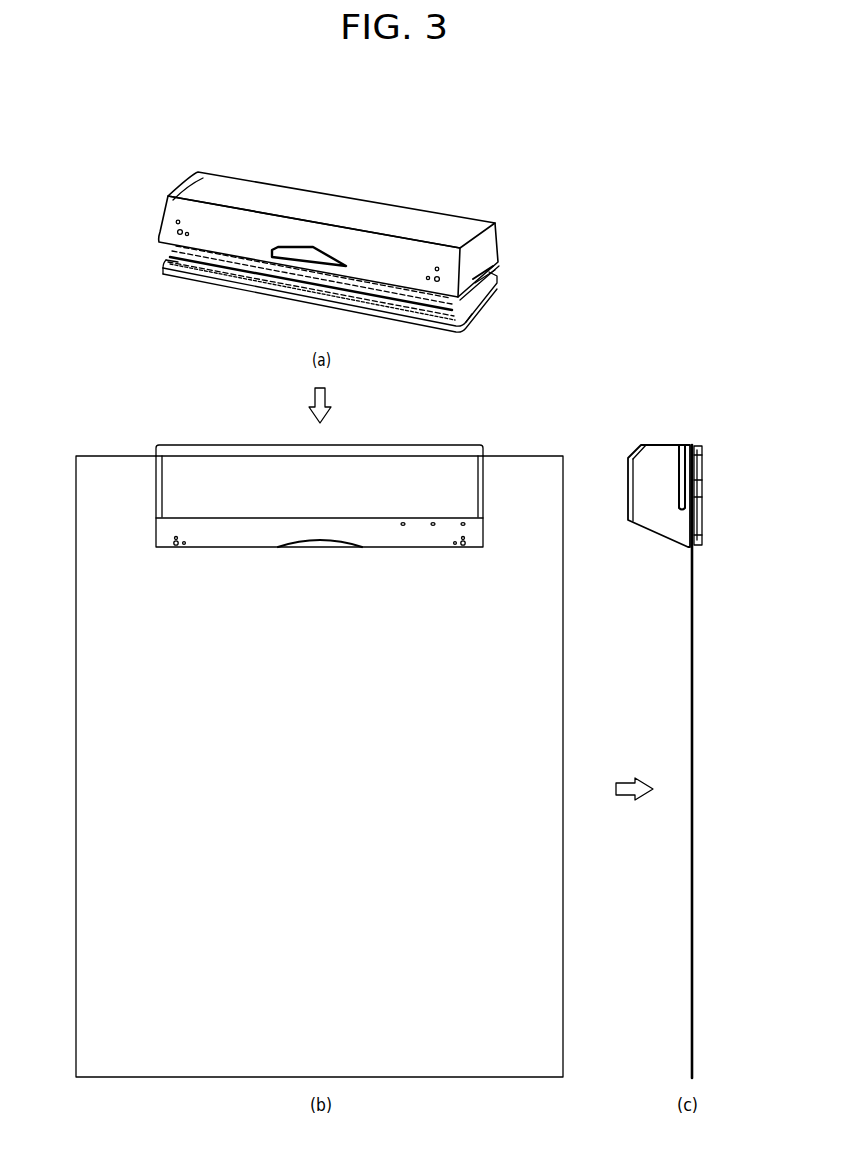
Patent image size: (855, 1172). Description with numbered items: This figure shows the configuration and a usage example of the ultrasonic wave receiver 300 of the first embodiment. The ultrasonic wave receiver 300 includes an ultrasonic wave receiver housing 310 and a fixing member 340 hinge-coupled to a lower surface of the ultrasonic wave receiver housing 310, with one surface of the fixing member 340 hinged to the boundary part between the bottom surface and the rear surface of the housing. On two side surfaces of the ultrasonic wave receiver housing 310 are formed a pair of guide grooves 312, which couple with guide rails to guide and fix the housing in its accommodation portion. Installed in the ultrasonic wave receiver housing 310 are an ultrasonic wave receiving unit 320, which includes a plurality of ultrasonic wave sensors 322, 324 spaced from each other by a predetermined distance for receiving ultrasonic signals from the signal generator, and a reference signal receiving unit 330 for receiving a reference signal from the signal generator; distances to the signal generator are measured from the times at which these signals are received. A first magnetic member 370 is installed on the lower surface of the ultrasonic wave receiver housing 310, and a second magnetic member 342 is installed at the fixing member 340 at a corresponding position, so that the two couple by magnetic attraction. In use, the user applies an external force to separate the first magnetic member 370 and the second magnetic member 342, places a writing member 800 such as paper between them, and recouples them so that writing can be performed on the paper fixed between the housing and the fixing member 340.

The ultrasonic wave receiver 300 is at (497, 435).
The ultrasonic wave receiver housing 310 is at (373, 250).
The guide groove 312 is at (500, 273).
The ultrasonic wave receiving unit 320 is at (318, 172).
The ultrasonic wave sensor 322 is at (178, 220).
The ultrasonic wave sensor 324 is at (441, 187).
The reference signal receiving unit 330 is at (300, 248).
The fixing member 340 is at (202, 280).
The second magnetic member 342 is at (402, 300).
The first magnetic member 370 is at (474, 301).
The writing member 800 is at (692, 931).